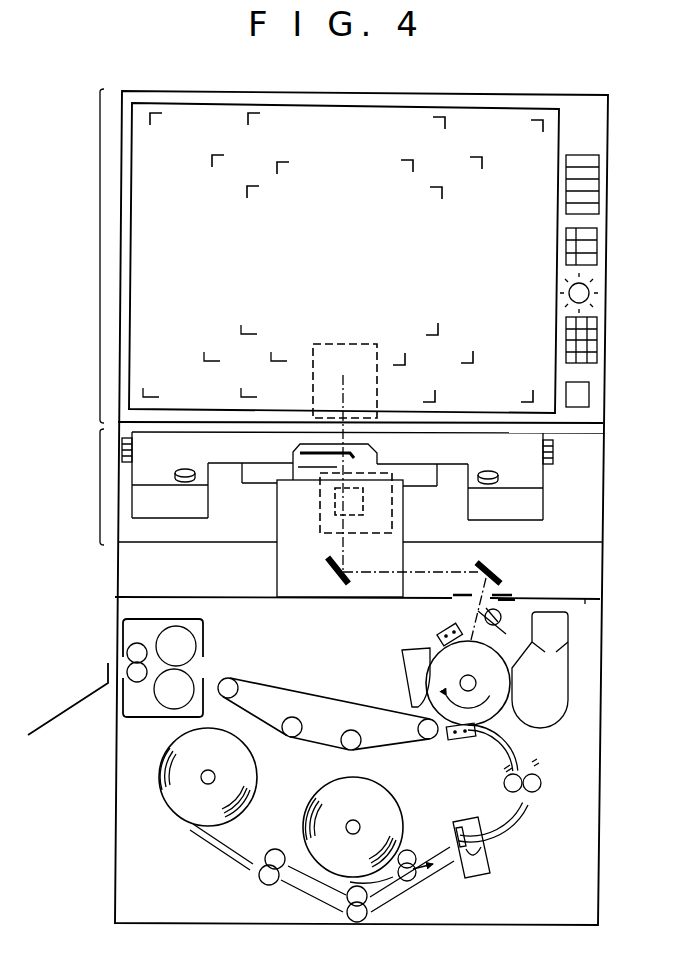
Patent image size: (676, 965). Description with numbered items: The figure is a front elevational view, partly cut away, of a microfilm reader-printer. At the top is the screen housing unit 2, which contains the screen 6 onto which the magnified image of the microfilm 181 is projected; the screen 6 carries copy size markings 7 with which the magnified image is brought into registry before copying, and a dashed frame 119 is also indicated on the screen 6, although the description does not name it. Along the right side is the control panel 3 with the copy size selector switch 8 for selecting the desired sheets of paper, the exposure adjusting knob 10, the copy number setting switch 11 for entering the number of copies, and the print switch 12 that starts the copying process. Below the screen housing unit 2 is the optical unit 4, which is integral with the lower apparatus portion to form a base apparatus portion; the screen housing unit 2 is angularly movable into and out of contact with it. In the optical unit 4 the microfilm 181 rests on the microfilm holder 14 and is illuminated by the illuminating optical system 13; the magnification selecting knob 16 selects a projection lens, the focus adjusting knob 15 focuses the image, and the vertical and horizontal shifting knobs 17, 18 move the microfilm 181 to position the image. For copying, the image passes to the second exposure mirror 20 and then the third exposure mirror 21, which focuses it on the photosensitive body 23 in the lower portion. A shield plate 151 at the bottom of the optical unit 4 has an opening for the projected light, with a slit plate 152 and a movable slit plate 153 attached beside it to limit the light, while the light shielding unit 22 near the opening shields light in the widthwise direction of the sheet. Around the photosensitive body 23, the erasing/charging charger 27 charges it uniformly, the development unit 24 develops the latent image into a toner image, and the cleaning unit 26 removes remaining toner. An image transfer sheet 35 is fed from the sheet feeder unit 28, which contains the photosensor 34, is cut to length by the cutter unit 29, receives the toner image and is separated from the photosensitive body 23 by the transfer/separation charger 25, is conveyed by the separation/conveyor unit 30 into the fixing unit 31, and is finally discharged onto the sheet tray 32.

The screen housing unit 2 is at (99, 224).
The control panel 3 is at (624, 241).
The optical unit 4 is at (99, 487).
The screen 6 is at (391, 108).
The copy size markings 7 is at (240, 326).
The copy size selector switch 8 is at (598, 170).
The exposure adjusting knob 10 is at (590, 293).
The copy number setting switch 11 is at (592, 345).
The print switch 12 is at (589, 395).
The illuminating optical system 13 is at (277, 580).
The microfilm holder 14 is at (295, 459).
The focus adjusting knob 15 is at (553, 456).
The magnification selecting knob 16 is at (128, 460).
The vertical shifting knob 17 is at (490, 471).
The horizontal shifting knob 18 is at (188, 469).
The second exposure mirror 20 is at (328, 572).
The third exposure mirror 21 is at (496, 576).
The light shielding unit 22 is at (503, 622).
The photosensitive body 23 is at (495, 707).
The development unit 24 is at (562, 708).
The transfer/separation charger 25 is at (462, 740).
The cleaning unit 26 is at (407, 668).
The erasing/charging charger 27 is at (442, 630).
The sheet feeder unit 28 is at (238, 848).
The cutter unit 29 is at (467, 874).
The separation/conveyor unit 30 is at (323, 694).
The fixing unit 31 is at (205, 632).
The sheet tray 32 is at (66, 712).
The photosensor 34 is at (538, 772).
The image transfer sheet 35 is at (250, 853).
The cursor frame 119 is at (346, 346).
The shield plate 151 is at (588, 605).
The slit plate 152 is at (457, 593).
The movable slit plate 153 is at (505, 593).
The microfilm 181 is at (364, 500).